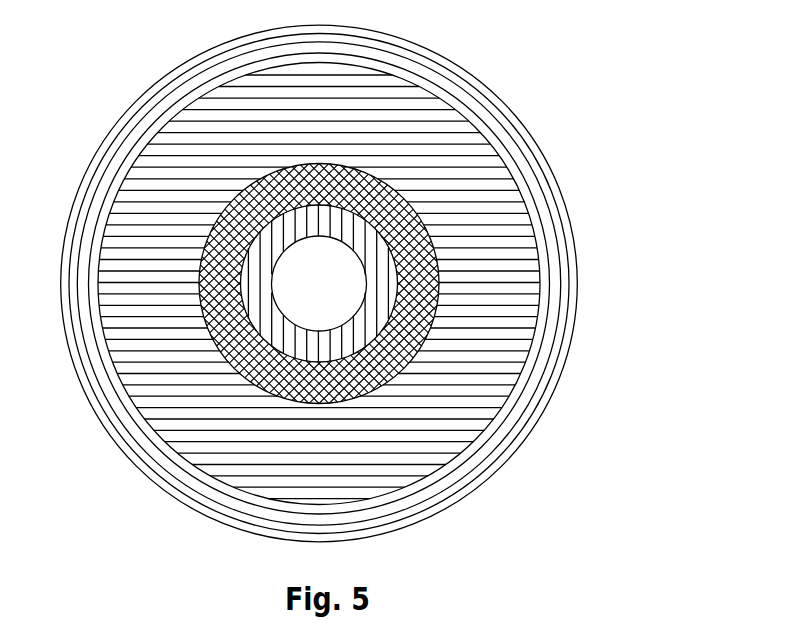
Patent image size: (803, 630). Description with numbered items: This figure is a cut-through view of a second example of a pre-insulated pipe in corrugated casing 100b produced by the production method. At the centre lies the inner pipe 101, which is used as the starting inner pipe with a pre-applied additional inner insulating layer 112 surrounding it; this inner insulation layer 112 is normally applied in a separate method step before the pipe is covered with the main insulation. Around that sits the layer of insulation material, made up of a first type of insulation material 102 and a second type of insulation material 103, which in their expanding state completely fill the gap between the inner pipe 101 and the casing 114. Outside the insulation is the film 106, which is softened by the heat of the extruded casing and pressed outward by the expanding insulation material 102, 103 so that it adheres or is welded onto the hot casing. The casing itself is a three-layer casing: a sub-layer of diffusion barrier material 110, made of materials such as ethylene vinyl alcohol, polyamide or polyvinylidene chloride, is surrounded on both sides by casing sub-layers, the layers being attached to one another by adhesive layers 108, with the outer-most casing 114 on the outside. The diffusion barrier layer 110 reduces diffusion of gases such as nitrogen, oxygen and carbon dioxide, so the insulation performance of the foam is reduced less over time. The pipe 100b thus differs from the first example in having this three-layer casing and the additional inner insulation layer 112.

The pipe in corrugated casing 100b is at (110, 85).
The inner pipe 101 is at (333, 333).
The first type of insulation material 102 is at (437, 287).
The second type of insulation material 103 is at (480, 302).
The film 106 is at (523, 195).
The adhesive layers 108 is at (552, 212).
The diffusion barrier material sub-layer 110 is at (538, 203).
The inner insulating layer 112 is at (418, 347).
The casing 114 is at (563, 223).